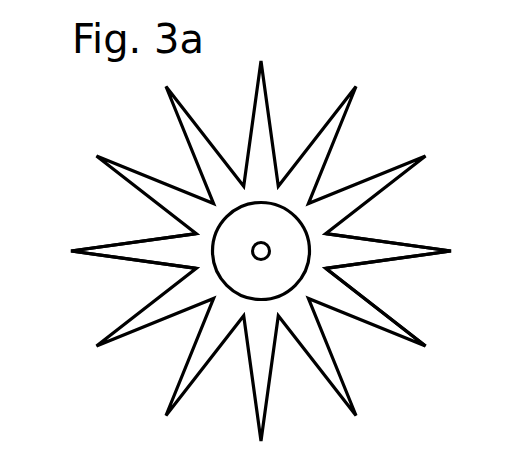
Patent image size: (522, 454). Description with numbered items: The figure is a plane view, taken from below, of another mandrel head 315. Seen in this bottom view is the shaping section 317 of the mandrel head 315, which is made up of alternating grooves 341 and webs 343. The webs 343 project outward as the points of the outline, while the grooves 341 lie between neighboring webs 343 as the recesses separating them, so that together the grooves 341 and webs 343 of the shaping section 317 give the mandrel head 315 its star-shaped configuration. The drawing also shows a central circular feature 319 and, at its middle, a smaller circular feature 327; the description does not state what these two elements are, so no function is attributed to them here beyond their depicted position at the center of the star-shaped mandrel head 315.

The mandrel head 315 is at (392, 120).
The shaping section 317 is at (117, 236).
The central circular hub 319 is at (222, 222).
The central hole 327 is at (254, 253).
The groove 341 is at (417, 290).
The web 343 is at (446, 252).